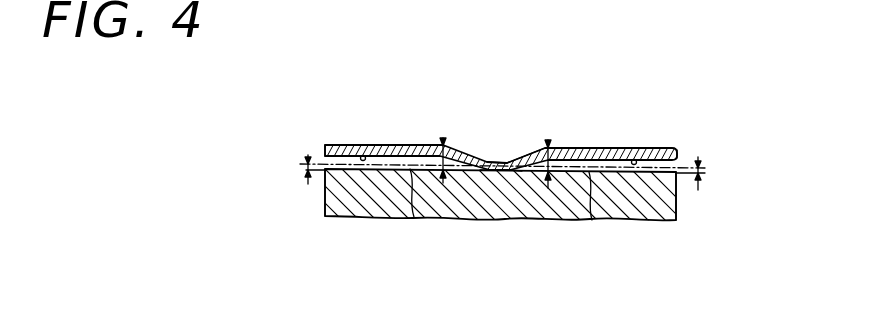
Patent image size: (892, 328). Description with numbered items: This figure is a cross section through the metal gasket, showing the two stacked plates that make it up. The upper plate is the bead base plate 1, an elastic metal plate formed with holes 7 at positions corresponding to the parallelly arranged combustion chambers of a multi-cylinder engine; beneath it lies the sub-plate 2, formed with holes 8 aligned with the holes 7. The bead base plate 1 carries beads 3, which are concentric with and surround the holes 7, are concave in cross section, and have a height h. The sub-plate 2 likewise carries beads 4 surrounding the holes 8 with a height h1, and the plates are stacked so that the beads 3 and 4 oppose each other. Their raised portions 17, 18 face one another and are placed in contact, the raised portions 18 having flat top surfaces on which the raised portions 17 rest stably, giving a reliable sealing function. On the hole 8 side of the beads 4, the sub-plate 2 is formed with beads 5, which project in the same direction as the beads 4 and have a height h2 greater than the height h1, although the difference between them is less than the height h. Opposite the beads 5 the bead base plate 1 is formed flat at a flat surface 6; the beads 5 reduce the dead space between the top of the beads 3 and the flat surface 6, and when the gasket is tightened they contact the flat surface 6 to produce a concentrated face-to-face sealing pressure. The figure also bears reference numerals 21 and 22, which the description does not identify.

The bead base plate 1 is at (588, 148).
The sub-plate 2 is at (452, 218).
The first beads 3 is at (504, 159).
The second beads 4 is at (504, 172).
The third beads 5 is at (414, 210).
The flat surface 6 is at (362, 156).
The first holes 7 is at (326, 146).
The second holes 8 is at (327, 198).
The raised portions 17 is at (494, 157).
The raised portions 18 is at (512, 190).
The depressed portion 21 is at (499, 159).
The contact edge 22 is at (496, 172).
The height h is at (442, 141).
The height h1 is at (549, 150).
The height h2 is at (727, 166).